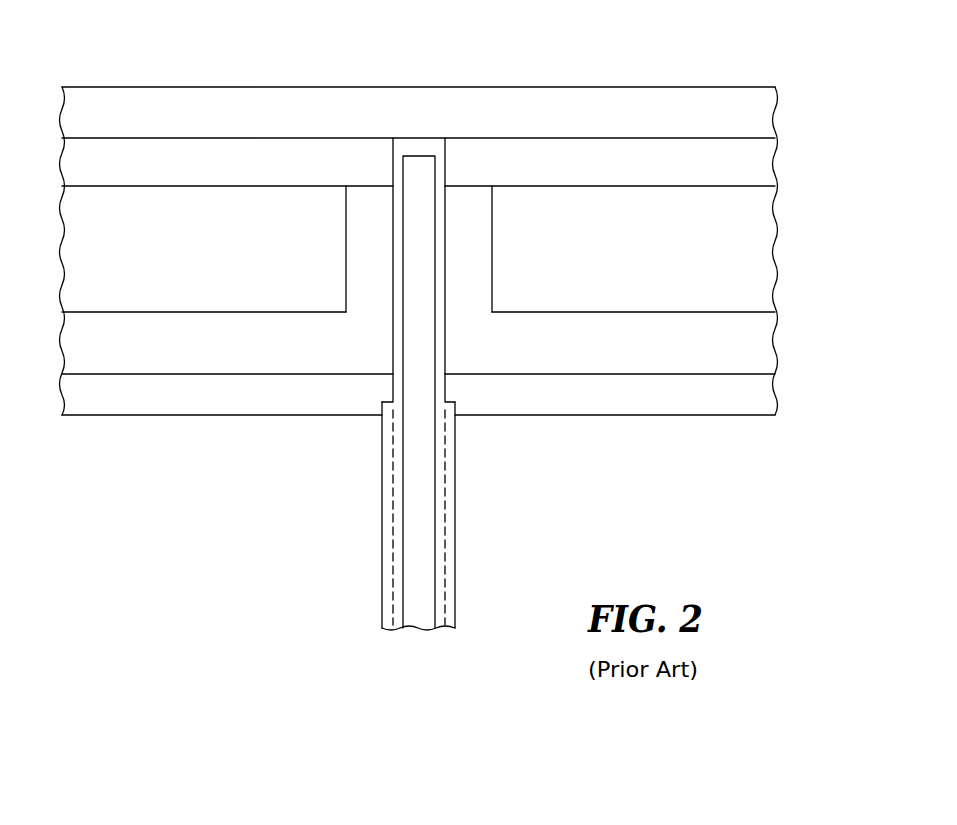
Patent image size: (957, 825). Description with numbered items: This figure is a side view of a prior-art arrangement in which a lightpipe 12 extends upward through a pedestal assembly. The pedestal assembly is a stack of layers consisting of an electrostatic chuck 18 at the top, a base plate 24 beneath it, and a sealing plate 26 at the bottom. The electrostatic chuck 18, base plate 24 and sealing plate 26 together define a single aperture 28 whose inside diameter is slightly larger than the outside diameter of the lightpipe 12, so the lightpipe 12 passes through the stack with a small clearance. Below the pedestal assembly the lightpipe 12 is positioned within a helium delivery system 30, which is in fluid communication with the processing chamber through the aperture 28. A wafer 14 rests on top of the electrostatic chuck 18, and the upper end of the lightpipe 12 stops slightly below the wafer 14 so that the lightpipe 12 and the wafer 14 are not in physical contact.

The lightpipe 12 is at (420, 617).
The wafer 14 is at (725, 96).
The electrostatic chuck 18 is at (762, 228).
The base plate 24 is at (768, 338).
The sealing plate 26 is at (763, 394).
The aperture 28 is at (423, 145).
The helium delivery system 30 is at (455, 553).